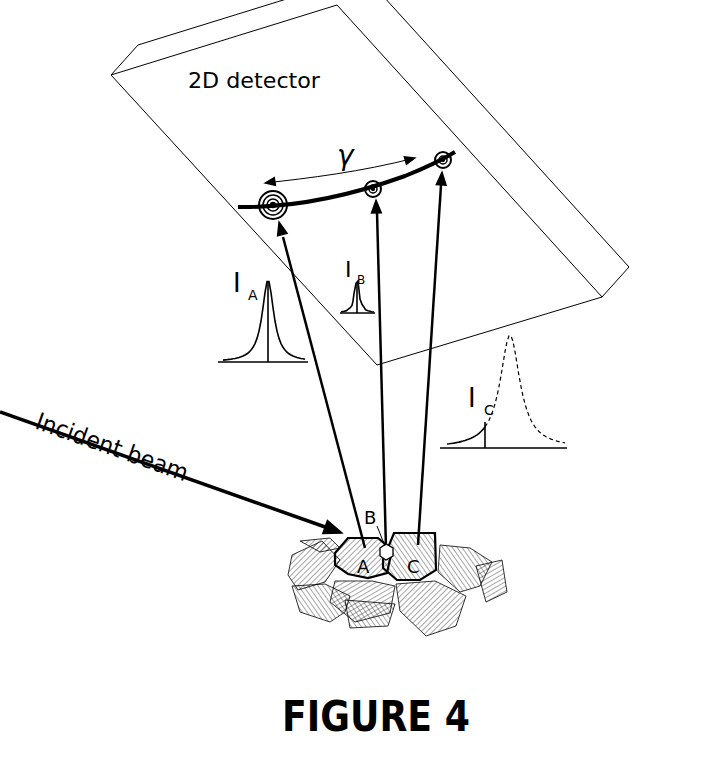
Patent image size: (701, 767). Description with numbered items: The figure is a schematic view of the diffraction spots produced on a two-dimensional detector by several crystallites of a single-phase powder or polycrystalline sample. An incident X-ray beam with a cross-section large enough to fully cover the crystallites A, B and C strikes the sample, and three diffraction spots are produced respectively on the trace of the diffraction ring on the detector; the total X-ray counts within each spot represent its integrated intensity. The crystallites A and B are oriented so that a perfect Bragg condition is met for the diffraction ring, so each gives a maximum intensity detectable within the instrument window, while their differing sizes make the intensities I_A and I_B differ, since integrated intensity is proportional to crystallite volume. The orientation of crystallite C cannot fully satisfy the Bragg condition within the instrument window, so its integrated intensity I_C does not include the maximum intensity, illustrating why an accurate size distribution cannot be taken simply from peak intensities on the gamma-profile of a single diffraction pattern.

The crystallite A is at (261, 194).
The crystallite B is at (383, 199).
The crystallite C is at (440, 146).